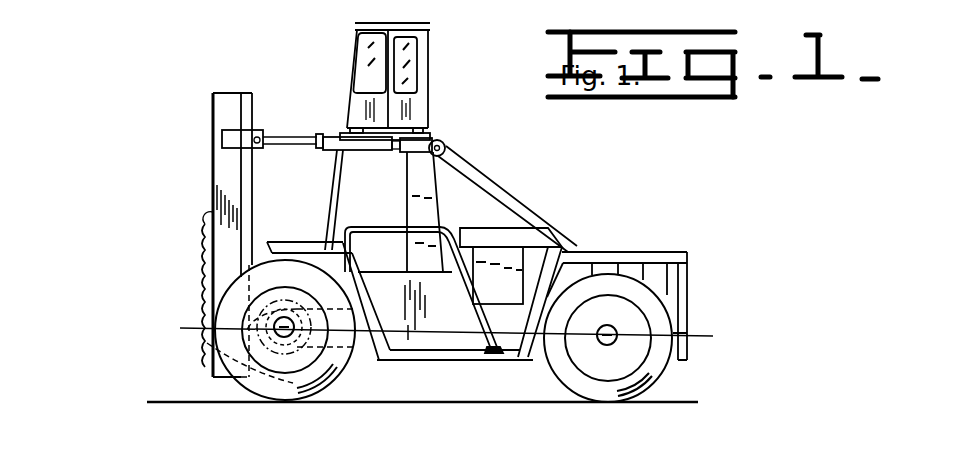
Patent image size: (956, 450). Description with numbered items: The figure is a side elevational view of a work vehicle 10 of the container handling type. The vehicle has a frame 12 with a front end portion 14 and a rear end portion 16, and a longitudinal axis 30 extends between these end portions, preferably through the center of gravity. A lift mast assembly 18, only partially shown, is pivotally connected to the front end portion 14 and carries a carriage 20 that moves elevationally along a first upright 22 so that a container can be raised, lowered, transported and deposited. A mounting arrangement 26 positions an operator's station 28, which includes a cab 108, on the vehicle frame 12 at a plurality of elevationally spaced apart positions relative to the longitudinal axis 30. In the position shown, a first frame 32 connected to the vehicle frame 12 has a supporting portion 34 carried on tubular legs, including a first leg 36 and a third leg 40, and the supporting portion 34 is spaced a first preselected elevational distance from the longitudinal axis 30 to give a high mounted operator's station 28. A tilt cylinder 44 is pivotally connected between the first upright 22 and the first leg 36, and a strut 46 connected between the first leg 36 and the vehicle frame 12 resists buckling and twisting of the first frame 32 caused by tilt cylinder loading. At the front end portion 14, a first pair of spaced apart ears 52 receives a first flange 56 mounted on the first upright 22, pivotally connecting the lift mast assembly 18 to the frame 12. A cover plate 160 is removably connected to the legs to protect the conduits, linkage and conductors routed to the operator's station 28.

The work vehicle 10 is at (780, 180).
The frame 12 is at (445, 350).
The front end portion 14 is at (293, 383).
The rear end portion 16 is at (540, 353).
The lift mast assembly 18 is at (190, 205).
The carriage 20 is at (203, 279).
The first upright 22 is at (218, 108).
The mounting arrangement 26 is at (126, 167).
The operator's station 28 is at (463, 73).
The longitudinal axis 30 is at (725, 308).
The first frame 32 is at (457, 195).
The supporting portion 34 is at (432, 136).
The first leg 36 is at (430, 215).
The third leg 40 is at (326, 188).
The tilt cylinder 44 is at (326, 137).
The strut 46 is at (518, 213).
The first pair of spaced apart ears 52 is at (207, 343).
The first flange 56 is at (215, 366).
The cab 108 is at (354, 55).
The cover plate 160 is at (407, 198).